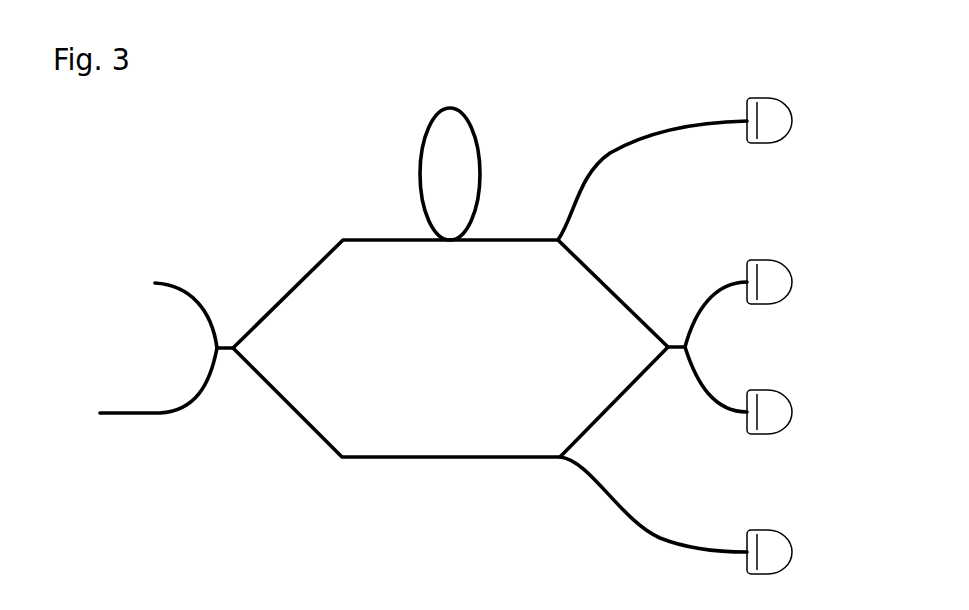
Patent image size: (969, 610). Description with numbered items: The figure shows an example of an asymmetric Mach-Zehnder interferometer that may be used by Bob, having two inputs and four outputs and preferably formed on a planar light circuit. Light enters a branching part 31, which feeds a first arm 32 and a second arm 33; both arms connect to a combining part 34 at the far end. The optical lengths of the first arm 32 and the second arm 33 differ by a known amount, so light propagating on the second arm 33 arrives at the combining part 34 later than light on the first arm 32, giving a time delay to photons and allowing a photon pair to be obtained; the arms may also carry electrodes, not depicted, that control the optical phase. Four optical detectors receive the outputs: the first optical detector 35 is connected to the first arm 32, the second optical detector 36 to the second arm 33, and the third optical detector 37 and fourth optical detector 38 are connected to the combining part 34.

The branching part 31 is at (240, 341).
The first arm 32 is at (480, 455).
The second arm 33 is at (510, 238).
The combining part 34 is at (670, 342).
The first optical detector 35 is at (772, 550).
The second optical detector 36 is at (772, 120).
The third optical detector 37 is at (772, 410).
The fourth optical detector 38 is at (772, 280).